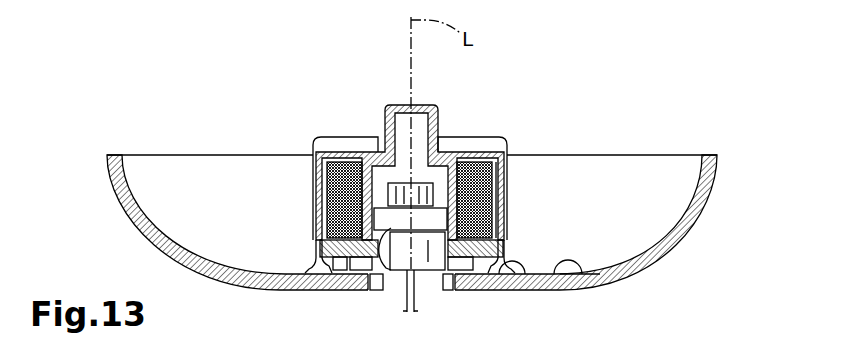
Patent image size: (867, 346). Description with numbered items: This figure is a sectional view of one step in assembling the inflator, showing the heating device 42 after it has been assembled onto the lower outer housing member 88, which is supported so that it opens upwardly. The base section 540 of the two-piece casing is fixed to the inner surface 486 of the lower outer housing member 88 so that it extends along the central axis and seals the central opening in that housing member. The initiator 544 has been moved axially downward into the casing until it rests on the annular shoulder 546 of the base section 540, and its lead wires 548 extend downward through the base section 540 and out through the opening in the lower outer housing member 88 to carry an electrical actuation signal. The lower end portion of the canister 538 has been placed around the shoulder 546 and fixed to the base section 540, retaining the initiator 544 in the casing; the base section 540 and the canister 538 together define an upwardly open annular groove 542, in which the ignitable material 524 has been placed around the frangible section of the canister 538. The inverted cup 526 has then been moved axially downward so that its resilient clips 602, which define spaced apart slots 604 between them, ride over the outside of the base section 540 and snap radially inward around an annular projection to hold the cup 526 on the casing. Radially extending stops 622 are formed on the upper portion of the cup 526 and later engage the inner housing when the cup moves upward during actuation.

The lower outer housing member 88 is at (712, 185).
The inner surface 486 is at (590, 291).
The slots 604 is at (537, 291).
The stops 622 is at (458, 138).
The heating device 42 is at (510, 165).
The cup 526 is at (313, 197).
The canister 538 is at (482, 158).
The ignitable material 524 is at (505, 181).
The resilient clips 602 is at (500, 248).
The base section 540 is at (330, 278).
The annular groove 542 is at (342, 274).
The initiator 544 is at (409, 196).
The lead wires 548 is at (408, 272).
The annular shoulder 546 is at (387, 270).